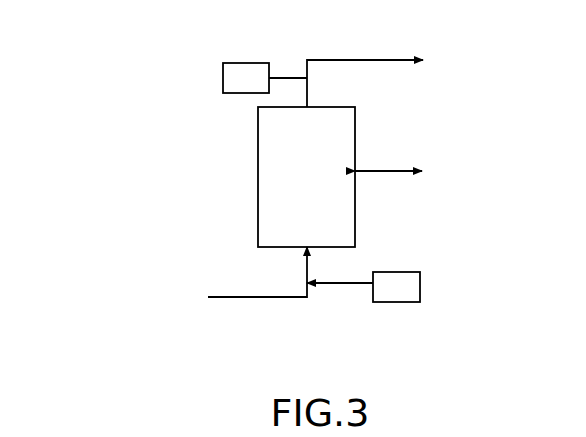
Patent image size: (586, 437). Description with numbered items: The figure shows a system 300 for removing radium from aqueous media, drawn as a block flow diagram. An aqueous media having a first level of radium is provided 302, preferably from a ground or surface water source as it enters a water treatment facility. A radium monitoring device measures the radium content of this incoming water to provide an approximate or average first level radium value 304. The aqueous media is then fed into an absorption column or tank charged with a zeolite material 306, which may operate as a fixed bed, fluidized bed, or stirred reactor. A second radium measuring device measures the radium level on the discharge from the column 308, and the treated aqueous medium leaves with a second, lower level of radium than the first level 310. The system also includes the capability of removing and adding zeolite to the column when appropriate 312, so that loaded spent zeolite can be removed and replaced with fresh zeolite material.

The system 300 is at (127, 92).
The aqueous media having a first level of radium 302 is at (255, 298).
The radium monitoring device 304 is at (420, 283).
The absorption column charged with zeolite material 306 is at (268, 167).
The second radium measuring device 308 is at (233, 63).
The aqueous medium having a second, lower level of radium 310 is at (400, 58).
The capability of removing and adding zeolite 312 is at (395, 170).